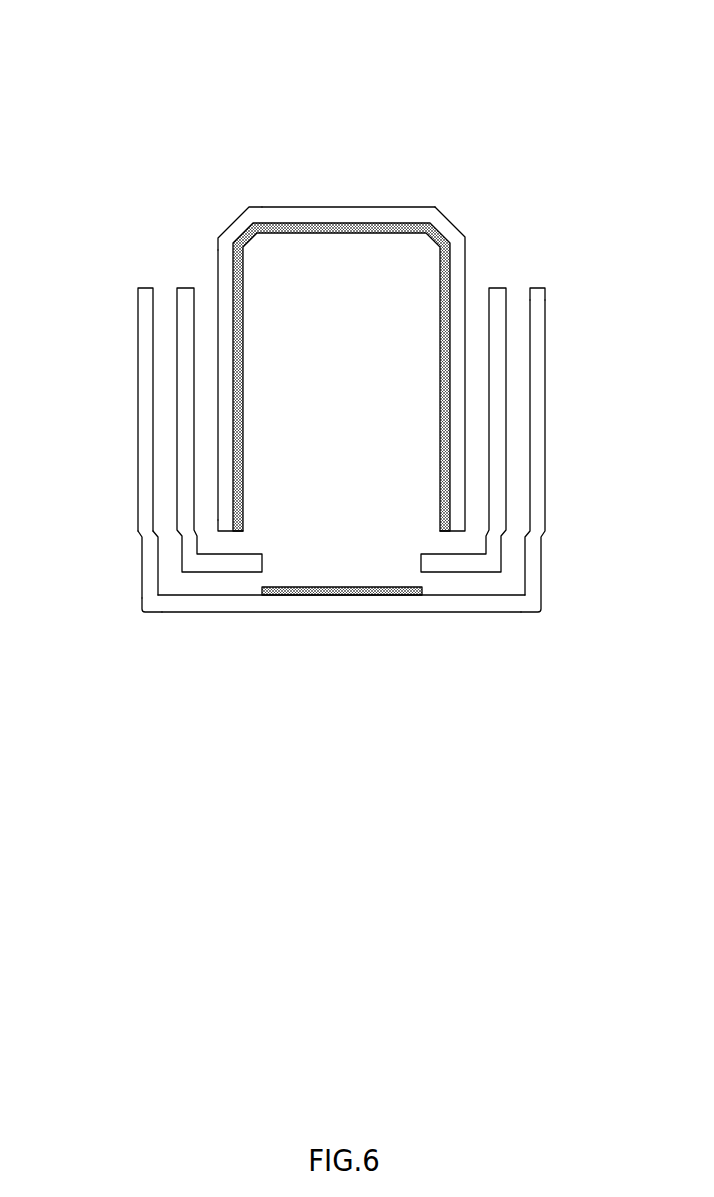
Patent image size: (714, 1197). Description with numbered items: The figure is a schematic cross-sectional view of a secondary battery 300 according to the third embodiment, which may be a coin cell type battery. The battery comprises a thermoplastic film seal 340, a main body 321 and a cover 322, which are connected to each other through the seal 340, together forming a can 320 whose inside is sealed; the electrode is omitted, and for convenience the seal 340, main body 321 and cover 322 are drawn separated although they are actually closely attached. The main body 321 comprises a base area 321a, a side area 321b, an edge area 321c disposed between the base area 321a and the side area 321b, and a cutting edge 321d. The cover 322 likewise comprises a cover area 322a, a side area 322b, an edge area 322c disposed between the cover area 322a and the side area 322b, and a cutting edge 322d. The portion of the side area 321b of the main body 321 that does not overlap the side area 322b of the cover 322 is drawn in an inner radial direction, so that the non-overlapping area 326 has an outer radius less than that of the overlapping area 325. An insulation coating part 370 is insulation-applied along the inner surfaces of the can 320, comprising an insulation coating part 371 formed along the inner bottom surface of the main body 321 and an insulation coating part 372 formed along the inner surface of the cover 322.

The secondary battery 300 is at (557, 73).
The can 320 is at (578, 713).
The main body 321 is at (279, 634).
The base area 321a is at (208, 613).
The side area 321b is at (559, 288).
The edge area 321c is at (141, 612).
The cutting edge 321d is at (537, 287).
The cover 322 is at (386, 191).
The cover area 322a is at (316, 217).
The side area 322b is at (236, 331).
The edge area 322c is at (231, 225).
The cutting edge 322d is at (232, 537).
The overlapping area 325 is at (124, 289).
The non-overlapping area 326 is at (124, 538).
The seal 340 is at (186, 287).
The insulation coating part 370 is at (413, 665).
The insulation coating part 371 is at (340, 597).
The insulation coating part 372 is at (440, 498).